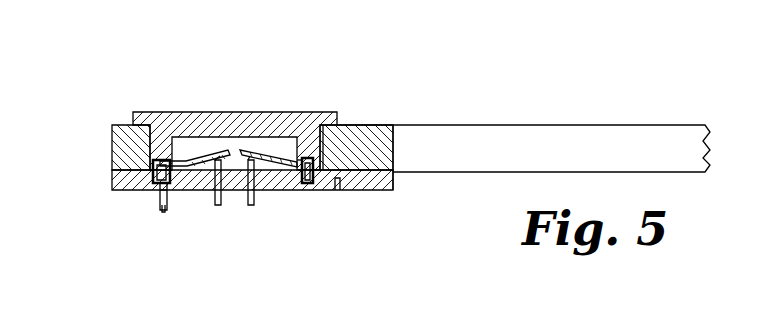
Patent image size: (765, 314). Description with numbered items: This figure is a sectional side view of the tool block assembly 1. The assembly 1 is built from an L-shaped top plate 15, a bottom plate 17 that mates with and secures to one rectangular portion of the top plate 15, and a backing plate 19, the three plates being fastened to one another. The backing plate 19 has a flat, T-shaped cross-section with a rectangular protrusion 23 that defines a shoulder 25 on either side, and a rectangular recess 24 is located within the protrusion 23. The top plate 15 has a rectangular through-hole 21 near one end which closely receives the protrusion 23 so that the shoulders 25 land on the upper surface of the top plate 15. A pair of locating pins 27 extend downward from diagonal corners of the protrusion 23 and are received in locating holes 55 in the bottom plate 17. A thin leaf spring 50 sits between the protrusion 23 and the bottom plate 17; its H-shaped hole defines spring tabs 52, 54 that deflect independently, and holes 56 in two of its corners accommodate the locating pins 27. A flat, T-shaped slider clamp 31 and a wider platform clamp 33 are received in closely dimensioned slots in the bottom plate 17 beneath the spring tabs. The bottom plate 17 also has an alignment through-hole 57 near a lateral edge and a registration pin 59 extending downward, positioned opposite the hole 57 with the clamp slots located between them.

The assembly 1 is at (456, 77).
The top plate 15 is at (600, 150).
The bottom plate 17 is at (393, 184).
The backing plate 19 is at (230, 135).
The rectangular through-hole 21 is at (320, 142).
The rectangular protrusion 23 is at (112, 150).
The rectangular recess 24 is at (388, 125).
The shoulder 25 is at (356, 122).
The locating pin 27 is at (160, 210).
The slider clamp 31 is at (258, 207).
The platform clamp 33 is at (217, 203).
The leaf spring 50 is at (237, 203).
The spring tab 52 is at (222, 150).
The spring tab 54 is at (260, 152).
The locating hole 55 is at (153, 188).
The hole 56 is at (312, 190).
The alignment through-hole 57 is at (342, 192).
The registration pin 59 is at (160, 209).